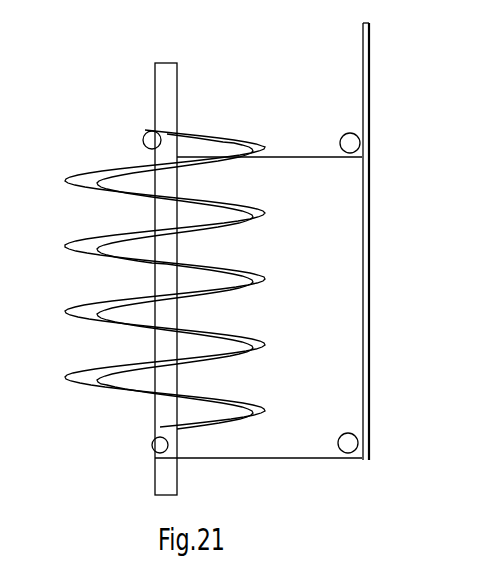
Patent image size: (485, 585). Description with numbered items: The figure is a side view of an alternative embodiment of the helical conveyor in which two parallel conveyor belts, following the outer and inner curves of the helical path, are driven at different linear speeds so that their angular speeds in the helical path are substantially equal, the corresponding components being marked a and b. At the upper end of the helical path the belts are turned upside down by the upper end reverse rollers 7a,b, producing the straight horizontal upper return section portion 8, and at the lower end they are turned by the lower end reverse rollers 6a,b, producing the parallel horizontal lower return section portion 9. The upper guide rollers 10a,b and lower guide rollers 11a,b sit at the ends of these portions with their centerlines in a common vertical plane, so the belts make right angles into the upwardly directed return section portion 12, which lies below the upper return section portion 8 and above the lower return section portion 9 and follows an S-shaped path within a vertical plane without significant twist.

The lower end reverse roller 6a,b is at (150, 449).
The upper end reverse roller 7a,b is at (145, 140).
The upper return section portion 8 is at (286, 157).
The lower return section portion 9 is at (293, 460).
The upper guide roller 10a,b is at (345, 135).
The lower guide roller 11a,b is at (354, 451).
The upwardly directed return section portion 12 is at (362, 280).